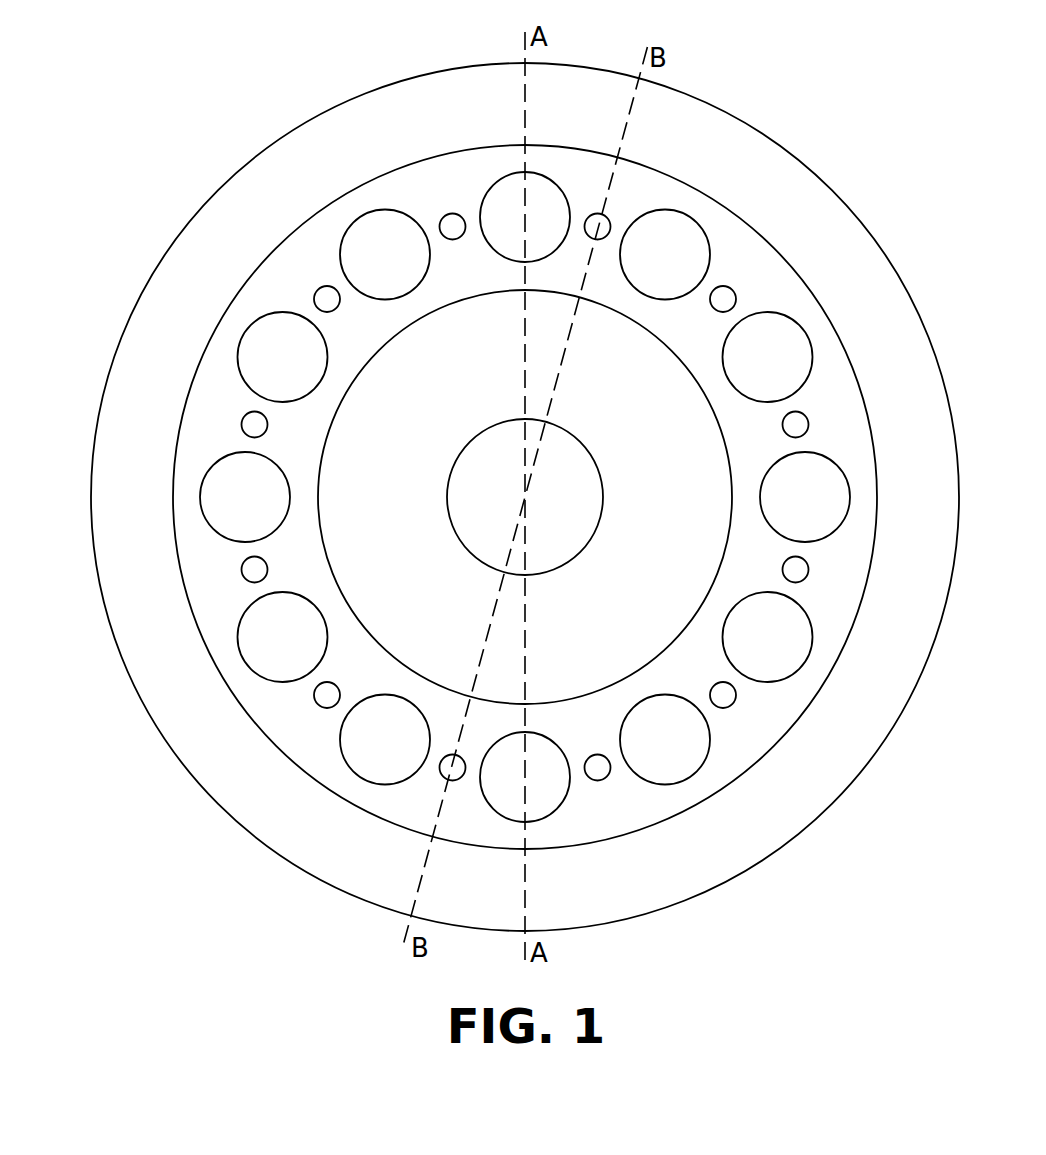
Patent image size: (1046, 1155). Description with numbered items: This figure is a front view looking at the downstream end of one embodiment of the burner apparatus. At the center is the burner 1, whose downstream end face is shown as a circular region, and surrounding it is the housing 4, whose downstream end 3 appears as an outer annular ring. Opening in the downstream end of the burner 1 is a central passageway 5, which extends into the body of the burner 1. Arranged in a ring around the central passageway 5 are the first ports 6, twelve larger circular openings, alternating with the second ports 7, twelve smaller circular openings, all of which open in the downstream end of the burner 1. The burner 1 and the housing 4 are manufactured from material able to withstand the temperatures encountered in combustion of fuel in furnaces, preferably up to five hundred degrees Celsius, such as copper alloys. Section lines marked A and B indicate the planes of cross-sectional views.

The burner 1 is at (732, 206).
The downstream end of housing 3 is at (500, 497).
The housing 4 is at (100, 403).
The central passageway 5 is at (549, 512).
The first ports 6 is at (537, 258).
The second ports 7 is at (607, 220).